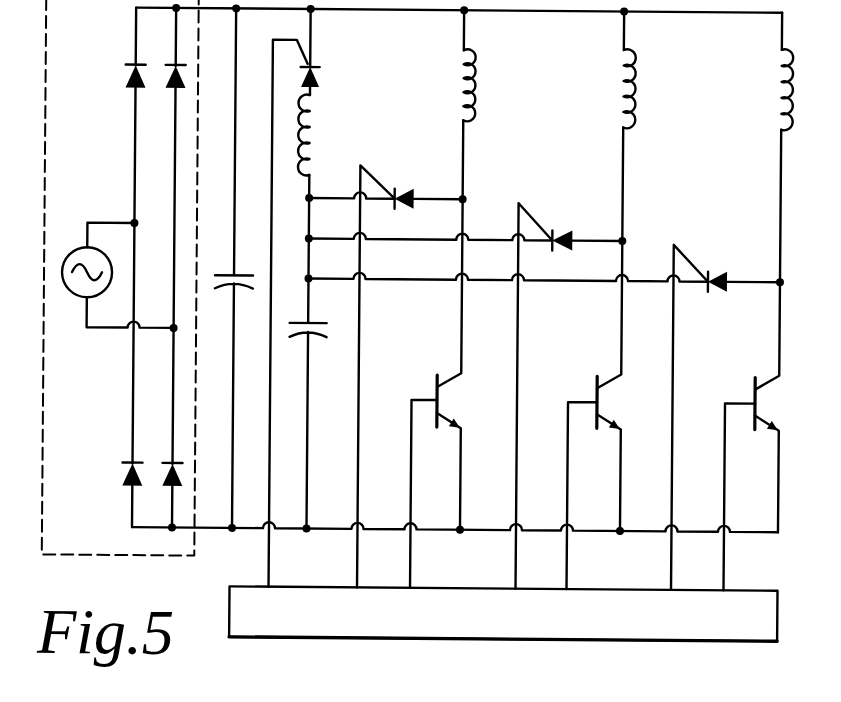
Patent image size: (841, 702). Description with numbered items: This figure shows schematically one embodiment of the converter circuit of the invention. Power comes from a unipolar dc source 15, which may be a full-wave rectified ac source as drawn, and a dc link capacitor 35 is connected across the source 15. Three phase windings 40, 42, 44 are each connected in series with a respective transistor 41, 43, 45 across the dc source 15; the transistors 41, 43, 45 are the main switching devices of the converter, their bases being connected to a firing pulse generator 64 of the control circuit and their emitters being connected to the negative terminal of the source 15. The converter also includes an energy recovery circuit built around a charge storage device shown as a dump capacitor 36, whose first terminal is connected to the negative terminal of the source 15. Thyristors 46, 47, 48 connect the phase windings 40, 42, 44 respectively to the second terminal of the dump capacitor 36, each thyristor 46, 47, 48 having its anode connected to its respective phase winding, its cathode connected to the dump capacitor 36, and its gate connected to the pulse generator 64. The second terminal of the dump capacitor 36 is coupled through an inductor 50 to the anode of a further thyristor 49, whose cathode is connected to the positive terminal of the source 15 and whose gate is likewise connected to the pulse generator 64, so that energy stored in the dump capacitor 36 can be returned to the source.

The unipolar dc source 15 is at (101, 54).
The dc link capacitor 35 is at (230, 272).
The dump capacitor 36 is at (312, 339).
The phase winding 40 is at (459, 84).
The transistor 41 is at (434, 396).
The phase winding 42 is at (619, 85).
The transistor 43 is at (594, 399).
The phase winding 44 is at (778, 85).
The transistor 45 is at (753, 399).
The thyristor 46 is at (400, 192).
The thyristor 47 is at (558, 235).
The thyristor 48 is at (716, 270).
The thyristor 49 is at (316, 73).
The inductor 50 is at (316, 117).
The firing pulse generator 64 is at (511, 622).